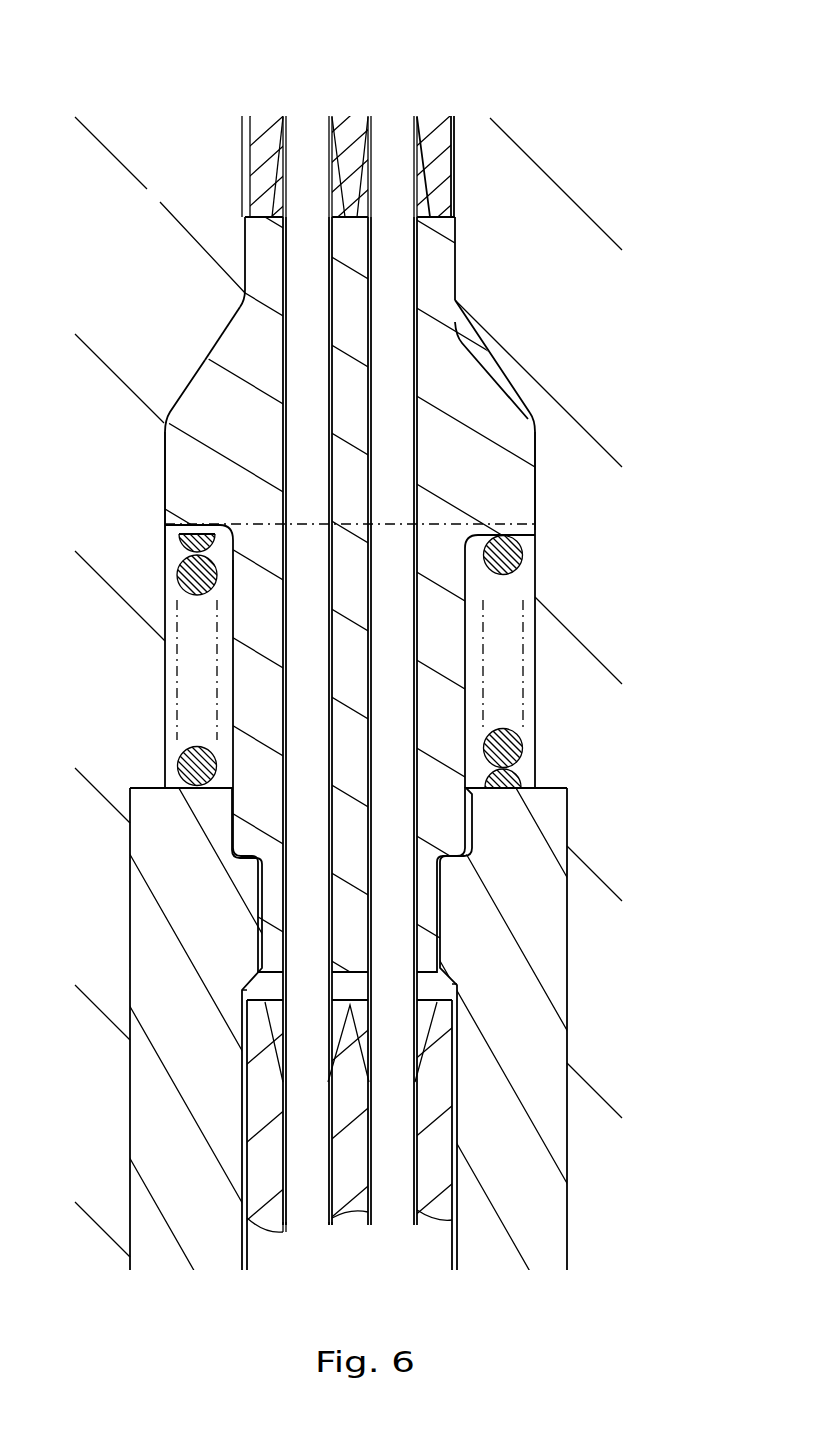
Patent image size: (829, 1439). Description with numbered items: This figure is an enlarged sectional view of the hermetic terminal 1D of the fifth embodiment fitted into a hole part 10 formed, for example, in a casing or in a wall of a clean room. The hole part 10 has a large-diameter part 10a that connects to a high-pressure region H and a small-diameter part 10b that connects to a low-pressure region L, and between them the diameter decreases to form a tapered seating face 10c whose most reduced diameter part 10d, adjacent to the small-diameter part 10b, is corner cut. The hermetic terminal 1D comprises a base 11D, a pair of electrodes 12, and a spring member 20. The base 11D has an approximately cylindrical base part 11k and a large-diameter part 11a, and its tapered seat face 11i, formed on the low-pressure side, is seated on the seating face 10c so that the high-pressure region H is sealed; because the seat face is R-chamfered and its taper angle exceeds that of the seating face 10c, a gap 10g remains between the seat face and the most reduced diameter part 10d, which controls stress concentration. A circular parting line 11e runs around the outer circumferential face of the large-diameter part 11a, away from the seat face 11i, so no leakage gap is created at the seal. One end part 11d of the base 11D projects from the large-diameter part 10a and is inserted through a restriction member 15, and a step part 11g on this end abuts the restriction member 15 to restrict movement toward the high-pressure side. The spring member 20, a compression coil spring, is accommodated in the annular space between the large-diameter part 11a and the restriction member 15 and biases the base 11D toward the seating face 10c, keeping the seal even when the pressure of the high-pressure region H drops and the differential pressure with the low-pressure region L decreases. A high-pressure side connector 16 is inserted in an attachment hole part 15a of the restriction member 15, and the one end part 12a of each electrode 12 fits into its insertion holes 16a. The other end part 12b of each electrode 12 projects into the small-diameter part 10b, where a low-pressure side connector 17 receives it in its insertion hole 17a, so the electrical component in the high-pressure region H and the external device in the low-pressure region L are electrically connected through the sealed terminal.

The hermetic terminal 1D is at (509, 297).
The hole part 10 is at (355, 749).
The large-diameter part 10a is at (537, 415).
The small-diameter part 10b is at (418, 146).
The seating face 10c is at (232, 340).
The most reduced diameter part 10d is at (242, 295).
The gap 10g is at (230, 338).
The large-diameter part 11a is at (178, 485).
The base 11D is at (517, 507).
The one end part 11d is at (428, 882).
The parting line 11e is at (523, 576).
The step part 11g is at (240, 858).
The seat face 11i is at (204, 380).
The base part 11k is at (453, 655).
The electrode 12 is at (300, 540).
The one end part 12a is at (392, 1213).
The other end part 12b is at (408, 142).
The restriction member 15 is at (538, 1203).
The attachment hole part 15a is at (457, 1076).
The high-pressure side connector 16 is at (436, 1243).
The insertion hole 16a is at (417, 1178).
The low-pressure side connector 17 is at (262, 122).
The insertion hole 17a is at (331, 153).
The spring member 20 is at (497, 742).
The high-pressure region H is at (428, 988).
The low-pressure region L is at (247, 211).